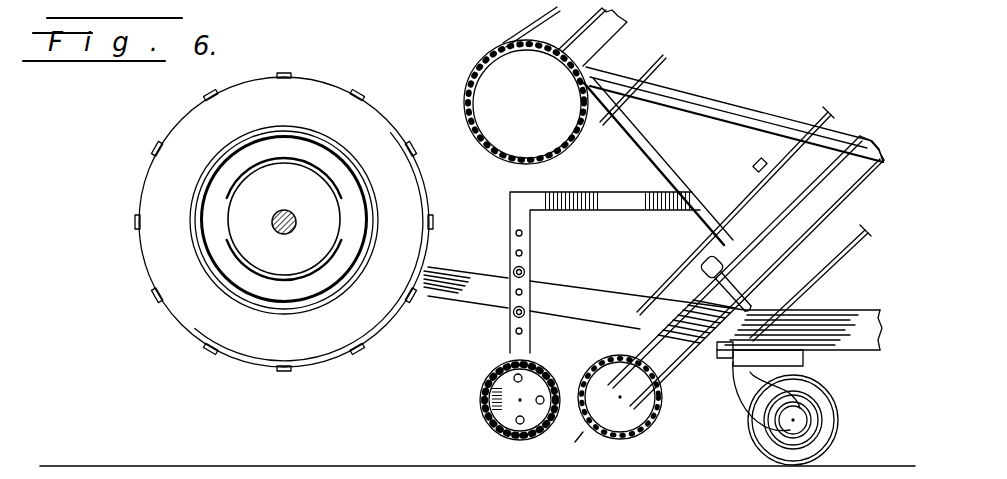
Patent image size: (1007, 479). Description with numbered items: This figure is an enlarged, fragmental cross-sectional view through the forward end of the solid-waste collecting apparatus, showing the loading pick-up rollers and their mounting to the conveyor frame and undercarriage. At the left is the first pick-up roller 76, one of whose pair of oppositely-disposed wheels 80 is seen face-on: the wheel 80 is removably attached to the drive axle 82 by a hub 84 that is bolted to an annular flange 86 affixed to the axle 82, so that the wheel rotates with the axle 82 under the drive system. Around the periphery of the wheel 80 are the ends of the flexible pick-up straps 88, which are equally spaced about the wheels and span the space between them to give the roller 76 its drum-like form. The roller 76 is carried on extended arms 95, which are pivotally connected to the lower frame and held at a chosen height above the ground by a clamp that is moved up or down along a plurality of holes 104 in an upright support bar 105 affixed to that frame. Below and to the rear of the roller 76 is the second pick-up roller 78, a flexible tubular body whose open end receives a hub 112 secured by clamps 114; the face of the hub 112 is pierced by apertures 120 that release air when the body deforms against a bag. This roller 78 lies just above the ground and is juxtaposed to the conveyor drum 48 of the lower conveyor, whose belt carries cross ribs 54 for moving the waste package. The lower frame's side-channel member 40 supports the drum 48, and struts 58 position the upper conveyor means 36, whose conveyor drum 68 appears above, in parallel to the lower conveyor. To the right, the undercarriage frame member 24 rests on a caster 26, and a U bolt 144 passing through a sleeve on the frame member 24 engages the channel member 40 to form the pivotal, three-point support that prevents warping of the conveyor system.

The frame member 24 is at (860, 322).
The caster 26 is at (836, 406).
The upper conveyor means 36 is at (663, 67).
The side-channel member 40 is at (818, 207).
The conveyor drum 48 is at (663, 398).
The cross ribs 54 is at (759, 160).
The struts 58 is at (662, 178).
The conveyor drum 68 is at (520, 44).
The first pick-up roller 76 is at (130, 179).
The second pick-up roller 78 is at (472, 400).
The wheels 80 is at (192, 138).
The drive axle 82 is at (289, 236).
The hub 84 is at (225, 265).
The annular flange 86 is at (300, 178).
The flexible pick-up straps 88 is at (353, 90).
The extended arms 95 is at (594, 304).
The holes 104 is at (528, 234).
The upright support bar 105 is at (512, 213).
The hubs 112 is at (488, 373).
The clamps 114 is at (477, 472).
The apertures 120 is at (518, 423).
The U bolt 144 is at (760, 305).